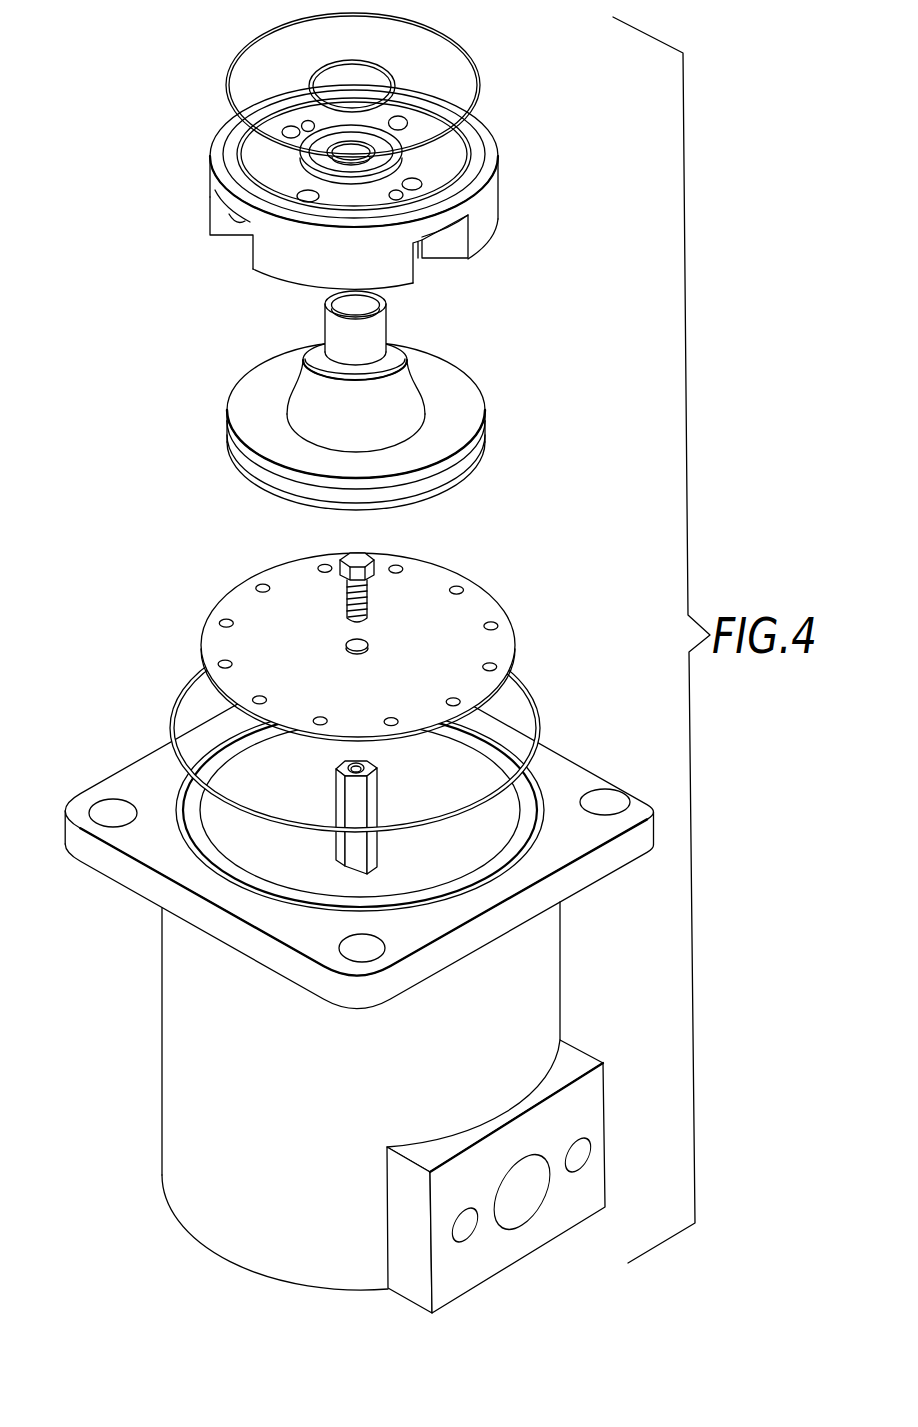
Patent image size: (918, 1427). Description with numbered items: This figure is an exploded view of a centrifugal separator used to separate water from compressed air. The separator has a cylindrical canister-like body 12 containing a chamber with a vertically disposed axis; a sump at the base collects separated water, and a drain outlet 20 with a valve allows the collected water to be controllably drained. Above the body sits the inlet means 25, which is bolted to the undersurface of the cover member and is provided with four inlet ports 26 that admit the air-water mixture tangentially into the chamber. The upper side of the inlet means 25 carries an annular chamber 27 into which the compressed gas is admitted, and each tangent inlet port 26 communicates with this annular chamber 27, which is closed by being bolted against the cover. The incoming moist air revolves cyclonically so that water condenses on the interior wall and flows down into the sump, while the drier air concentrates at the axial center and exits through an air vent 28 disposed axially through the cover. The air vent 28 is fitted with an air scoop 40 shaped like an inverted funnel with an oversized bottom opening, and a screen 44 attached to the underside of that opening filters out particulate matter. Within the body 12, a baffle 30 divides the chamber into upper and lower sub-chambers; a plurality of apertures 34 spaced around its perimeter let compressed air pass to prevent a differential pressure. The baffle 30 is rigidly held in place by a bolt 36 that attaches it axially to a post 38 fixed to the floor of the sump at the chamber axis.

The body 12 is at (130, 1007).
The drain outlet 20 is at (508, 1217).
The inlet means 25 is at (519, 146).
The inlet ports 26 is at (398, 116).
The annular chamber 27 is at (258, 170).
The air vent 28 is at (334, 331).
The baffle 30 is at (508, 586).
The apertures 34 is at (486, 623).
The bolt 36 is at (348, 604).
The post 38 is at (336, 775).
The air scoop 40 is at (495, 408).
The screen 44 is at (299, 505).